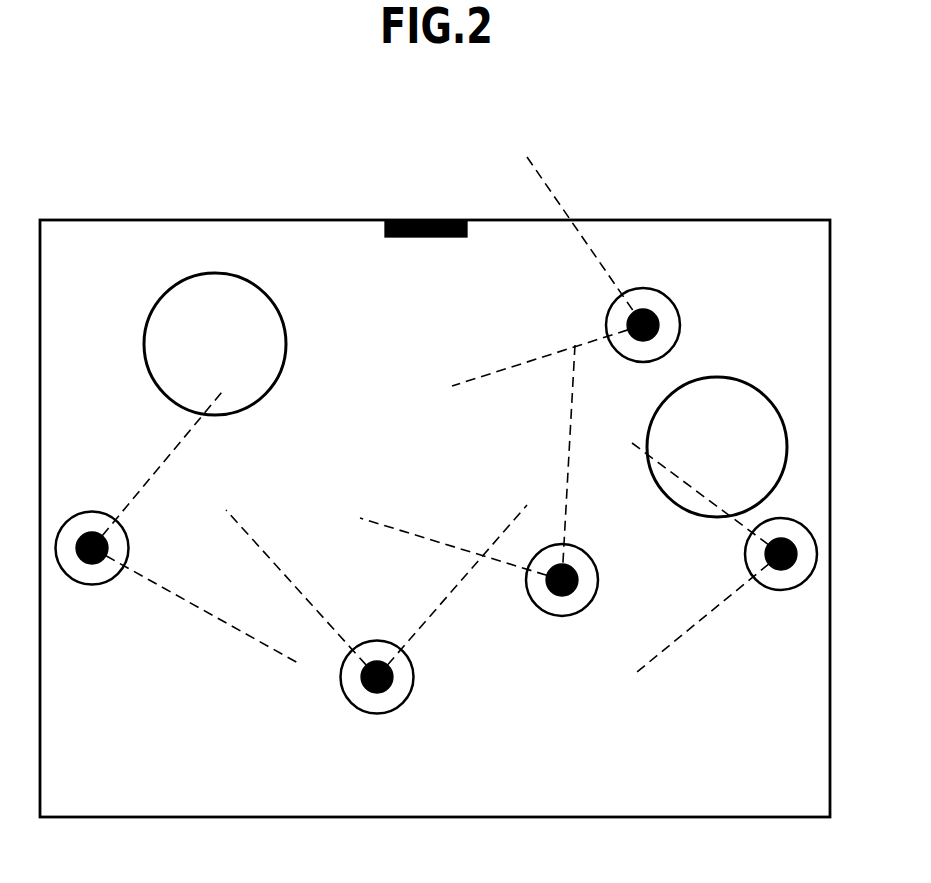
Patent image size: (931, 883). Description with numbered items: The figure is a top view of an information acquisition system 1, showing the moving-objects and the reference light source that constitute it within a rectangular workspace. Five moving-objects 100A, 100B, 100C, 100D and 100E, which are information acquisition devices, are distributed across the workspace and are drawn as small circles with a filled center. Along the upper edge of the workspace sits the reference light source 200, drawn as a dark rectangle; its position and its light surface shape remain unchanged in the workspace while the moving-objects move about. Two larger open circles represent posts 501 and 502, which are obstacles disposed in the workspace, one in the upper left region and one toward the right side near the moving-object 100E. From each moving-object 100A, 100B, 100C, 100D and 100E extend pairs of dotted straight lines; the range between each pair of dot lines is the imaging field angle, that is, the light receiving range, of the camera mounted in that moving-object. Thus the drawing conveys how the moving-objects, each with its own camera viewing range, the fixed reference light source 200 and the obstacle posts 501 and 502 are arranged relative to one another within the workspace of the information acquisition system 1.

The information acquisition system 1 is at (283, 198).
The reference light source 200 is at (433, 220).
The post 501 is at (178, 282).
The post 502 is at (742, 377).
The moving-object 100A is at (660, 292).
The moving-object 100B is at (565, 617).
The moving-object 100C is at (377, 714).
The moving-object 100D is at (100, 585).
The moving-object 100E is at (783, 590).